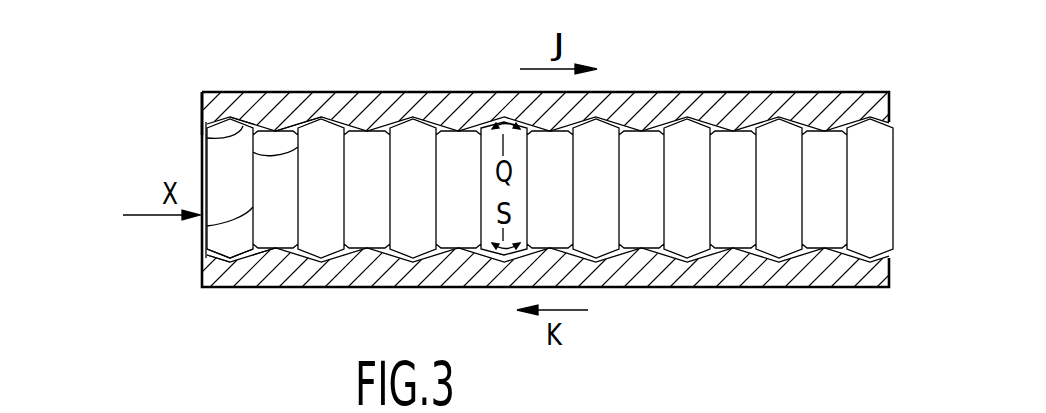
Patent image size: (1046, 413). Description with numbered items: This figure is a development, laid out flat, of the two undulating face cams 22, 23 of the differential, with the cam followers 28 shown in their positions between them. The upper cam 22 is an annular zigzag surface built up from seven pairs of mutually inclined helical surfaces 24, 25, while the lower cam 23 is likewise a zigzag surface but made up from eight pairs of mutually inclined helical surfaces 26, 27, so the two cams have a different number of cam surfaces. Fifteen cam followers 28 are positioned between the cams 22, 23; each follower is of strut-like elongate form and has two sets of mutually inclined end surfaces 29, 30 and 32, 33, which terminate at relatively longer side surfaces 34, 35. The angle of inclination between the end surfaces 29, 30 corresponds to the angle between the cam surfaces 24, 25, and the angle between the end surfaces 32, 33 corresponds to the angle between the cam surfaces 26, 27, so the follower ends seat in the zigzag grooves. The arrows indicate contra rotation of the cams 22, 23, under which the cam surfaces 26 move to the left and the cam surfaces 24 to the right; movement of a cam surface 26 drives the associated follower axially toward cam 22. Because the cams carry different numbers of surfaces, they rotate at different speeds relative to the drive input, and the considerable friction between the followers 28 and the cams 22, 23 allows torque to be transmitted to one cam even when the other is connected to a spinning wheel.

The undulating face cam 22 is at (692, 92).
The undulating face cam 23 is at (198, 268).
The helical surface 24 is at (242, 127).
The helical surface 25 is at (289, 121).
The helical surface 26 is at (230, 287).
The helical surface 27 is at (267, 287).
The cam follower 28 is at (230, 170).
The end surface 29 is at (202, 92).
The end surface 30 is at (205, 136).
The end surface 32 is at (204, 268).
The end surface 33 is at (204, 254).
The side surface 34 is at (318, 131).
The side surface 35 is at (207, 225).